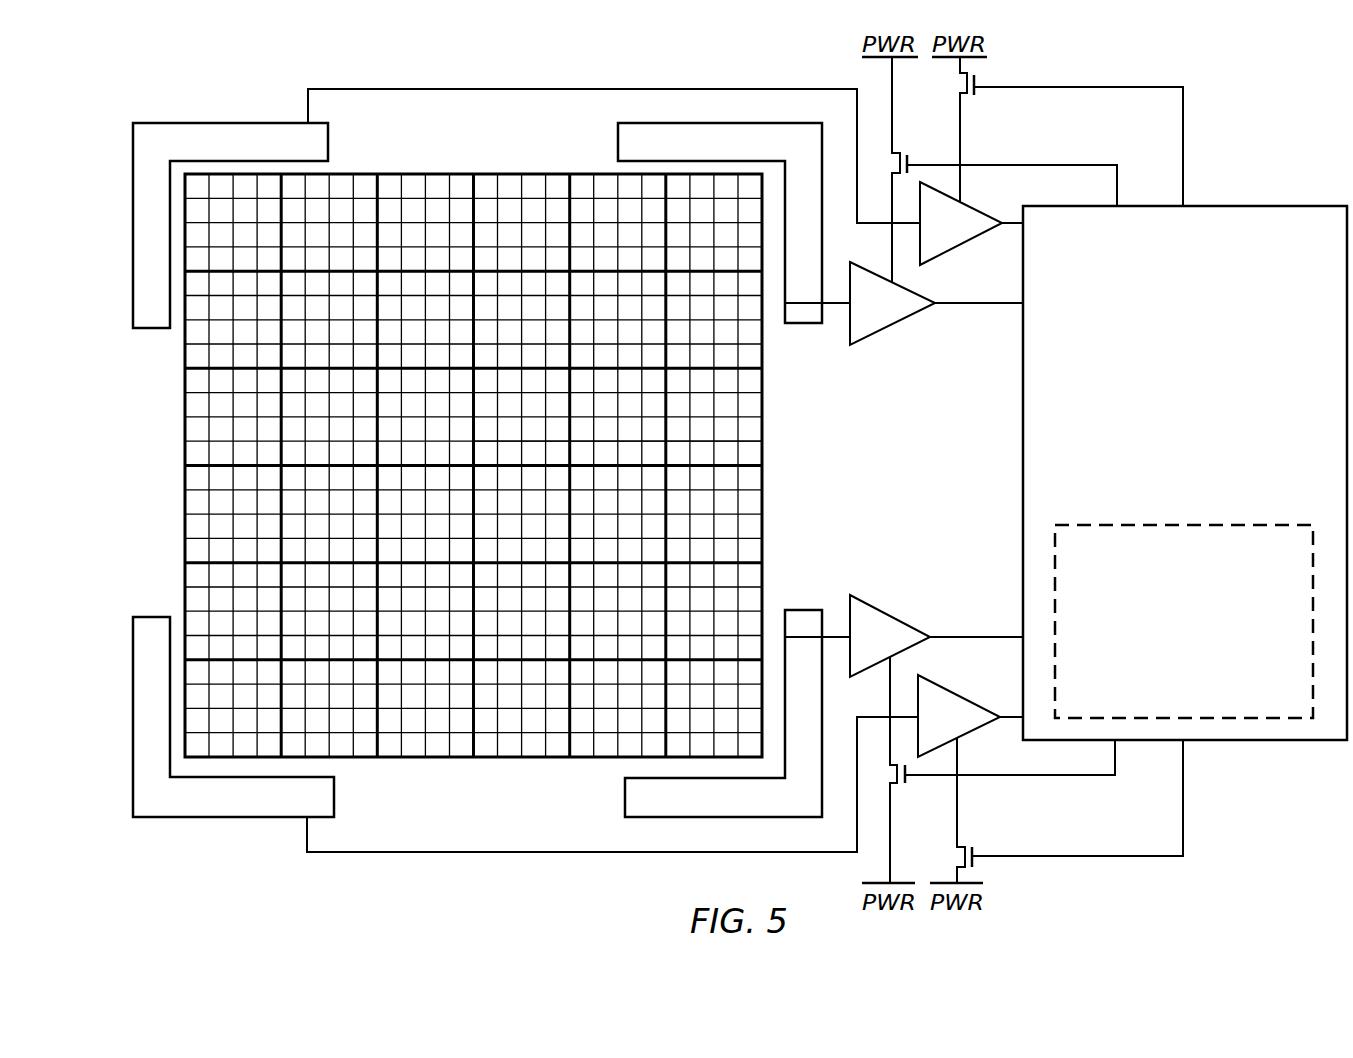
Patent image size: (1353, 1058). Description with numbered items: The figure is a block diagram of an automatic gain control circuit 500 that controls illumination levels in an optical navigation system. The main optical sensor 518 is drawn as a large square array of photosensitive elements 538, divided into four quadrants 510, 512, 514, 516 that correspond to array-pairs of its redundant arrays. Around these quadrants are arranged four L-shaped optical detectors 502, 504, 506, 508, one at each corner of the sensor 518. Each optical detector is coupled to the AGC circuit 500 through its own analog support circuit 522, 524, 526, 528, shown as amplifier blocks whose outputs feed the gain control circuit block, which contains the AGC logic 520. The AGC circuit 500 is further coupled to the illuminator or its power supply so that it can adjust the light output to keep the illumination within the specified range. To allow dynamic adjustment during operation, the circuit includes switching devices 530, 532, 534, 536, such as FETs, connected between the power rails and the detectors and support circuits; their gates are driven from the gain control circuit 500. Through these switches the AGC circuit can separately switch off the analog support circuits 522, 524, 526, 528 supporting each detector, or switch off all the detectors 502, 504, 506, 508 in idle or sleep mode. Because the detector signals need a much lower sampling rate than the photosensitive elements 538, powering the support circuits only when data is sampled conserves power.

The AGC circuit 500 is at (1318, 246).
The optical detector 502 is at (188, 151).
The optical detector 504 is at (758, 154).
The optical detector 506 is at (802, 807).
The optical detector 508 is at (192, 809).
The quadrant 510 is at (329, 320).
The quadrant 512 is at (618, 612).
The quadrant 514 is at (618, 320).
The quadrant 516 is at (329, 612).
The optical sensor 518 is at (521, 465).
The AGC logic 520 is at (1299, 552).
The analog support circuit 522 is at (968, 233).
The analog support circuit 524 is at (897, 313).
The analog support circuit 526 is at (897, 647).
The analog support circuit 528 is at (966, 726).
The switching device 530 is at (957, 86).
The switching device 532 is at (918, 158).
The switching device 534 is at (915, 785).
The switching device 536 is at (957, 858).
The photosensitive element 538 is at (763, 452).